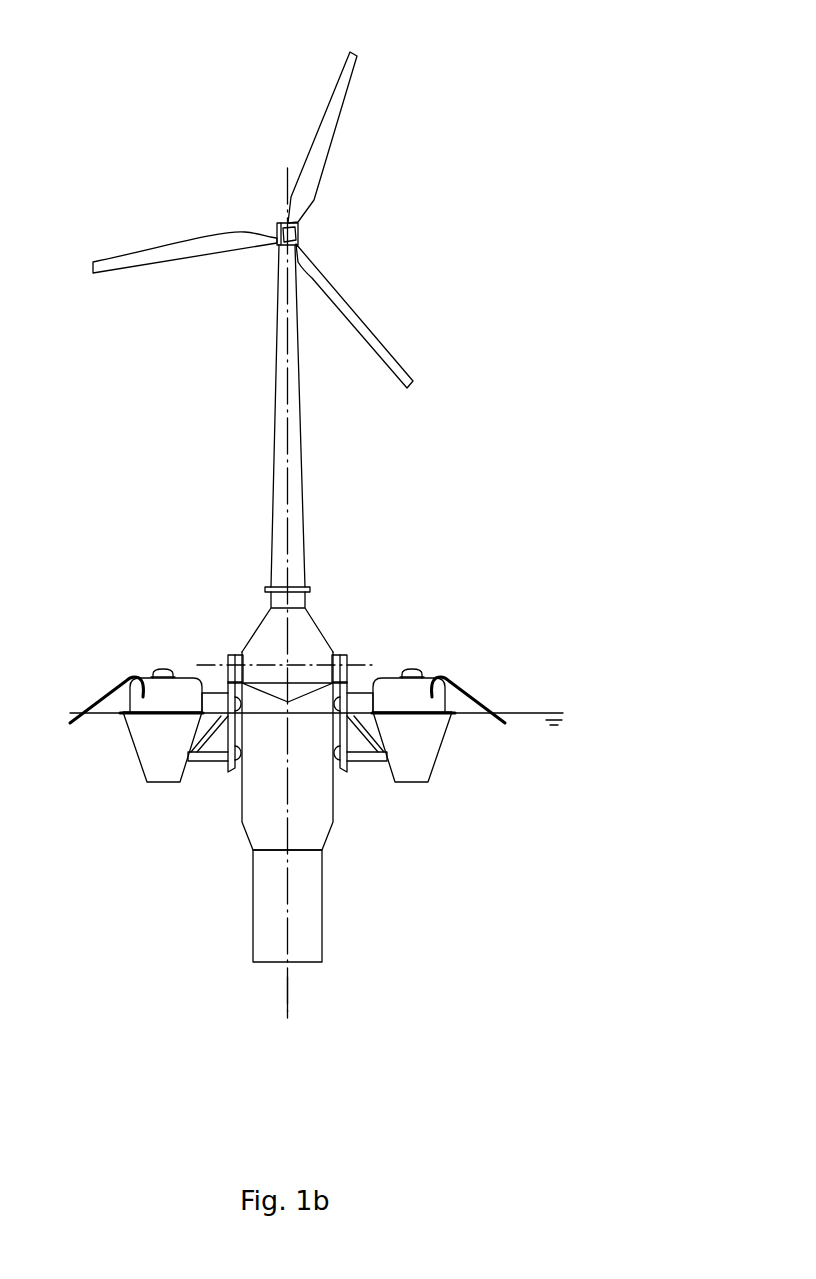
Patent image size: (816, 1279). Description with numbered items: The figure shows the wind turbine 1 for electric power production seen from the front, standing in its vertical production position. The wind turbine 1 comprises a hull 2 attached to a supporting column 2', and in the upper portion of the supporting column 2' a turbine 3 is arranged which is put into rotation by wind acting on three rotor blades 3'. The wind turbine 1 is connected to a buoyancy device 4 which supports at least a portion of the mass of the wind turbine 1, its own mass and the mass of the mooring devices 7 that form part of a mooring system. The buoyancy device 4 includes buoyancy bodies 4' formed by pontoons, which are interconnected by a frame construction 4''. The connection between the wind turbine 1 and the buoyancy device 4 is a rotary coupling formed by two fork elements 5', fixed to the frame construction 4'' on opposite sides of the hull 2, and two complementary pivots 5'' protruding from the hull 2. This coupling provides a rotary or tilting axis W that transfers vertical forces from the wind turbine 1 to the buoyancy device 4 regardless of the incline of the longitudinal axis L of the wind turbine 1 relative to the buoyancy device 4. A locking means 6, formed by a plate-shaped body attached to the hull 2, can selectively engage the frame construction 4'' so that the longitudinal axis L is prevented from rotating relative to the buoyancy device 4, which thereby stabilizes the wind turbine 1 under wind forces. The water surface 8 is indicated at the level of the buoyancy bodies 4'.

The wind turbine 1 is at (86, 171).
The hull 2 is at (358, 807).
The supporting column 2' is at (342, 448).
The wind turbine (turbine) 3 is at (351, 232).
The rotor blades 3' is at (301, 220).
The buoyancy device 4 is at (358, 761).
The buoyancy bodies 4' is at (481, 725).
The frame construction 4'' is at (401, 672).
The fork elements 5' is at (180, 640).
The pivots 5'' is at (370, 644).
The locking means 6 is at (288, 702).
The mooring devices 7 is at (98, 694).
The water surface 8 is at (549, 707).
The rotary or tilting axis W is at (205, 663).
The longitudinal axis L is at (288, 1003).